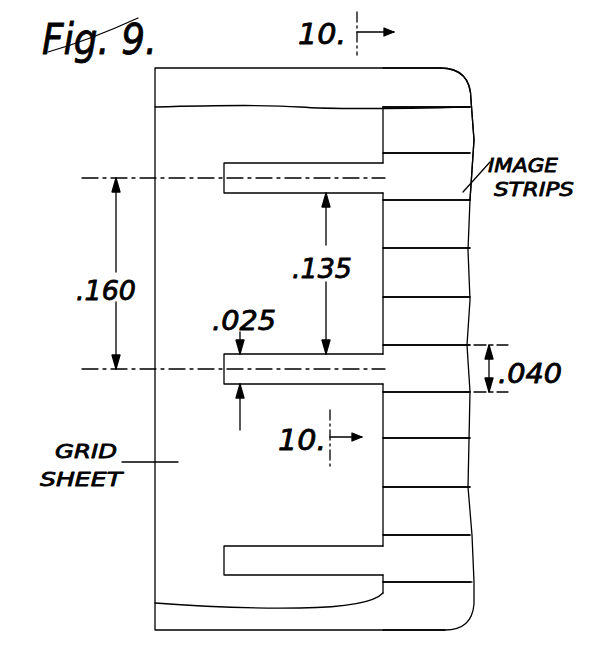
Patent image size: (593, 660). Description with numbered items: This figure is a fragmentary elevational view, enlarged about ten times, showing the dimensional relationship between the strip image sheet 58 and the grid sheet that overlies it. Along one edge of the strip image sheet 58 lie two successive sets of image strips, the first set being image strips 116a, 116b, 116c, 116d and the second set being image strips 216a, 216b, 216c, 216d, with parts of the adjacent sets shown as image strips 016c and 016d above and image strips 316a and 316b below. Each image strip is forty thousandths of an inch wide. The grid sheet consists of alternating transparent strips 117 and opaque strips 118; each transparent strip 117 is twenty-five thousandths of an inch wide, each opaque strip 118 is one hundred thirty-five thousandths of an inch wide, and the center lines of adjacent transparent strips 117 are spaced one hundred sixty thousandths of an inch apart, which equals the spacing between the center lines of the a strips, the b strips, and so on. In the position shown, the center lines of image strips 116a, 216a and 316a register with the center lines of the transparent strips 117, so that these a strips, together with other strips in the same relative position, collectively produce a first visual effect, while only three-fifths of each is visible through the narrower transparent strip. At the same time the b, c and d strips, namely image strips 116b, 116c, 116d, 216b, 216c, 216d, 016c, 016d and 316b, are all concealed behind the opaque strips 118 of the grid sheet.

The opaque strips of the grid sheet 118 is at (251, 100).
The transparent strips of the grid sheet 117 is at (284, 166).
The strip image sheet 58 is at (462, 102).
The image strip 016c is at (445, 106).
The image strip 016d is at (446, 152).
The image strip 116a is at (448, 197).
The image strip 116b is at (450, 244).
The image strip 116c is at (448, 291).
The image strip 116d is at (448, 339).
The image strip 216a is at (448, 385).
The image strip 216b is at (448, 434).
The image strip 216c is at (448, 482).
The image strip 216d is at (448, 529).
The image strip 316a is at (450, 575).
The image strip 316b is at (444, 620).